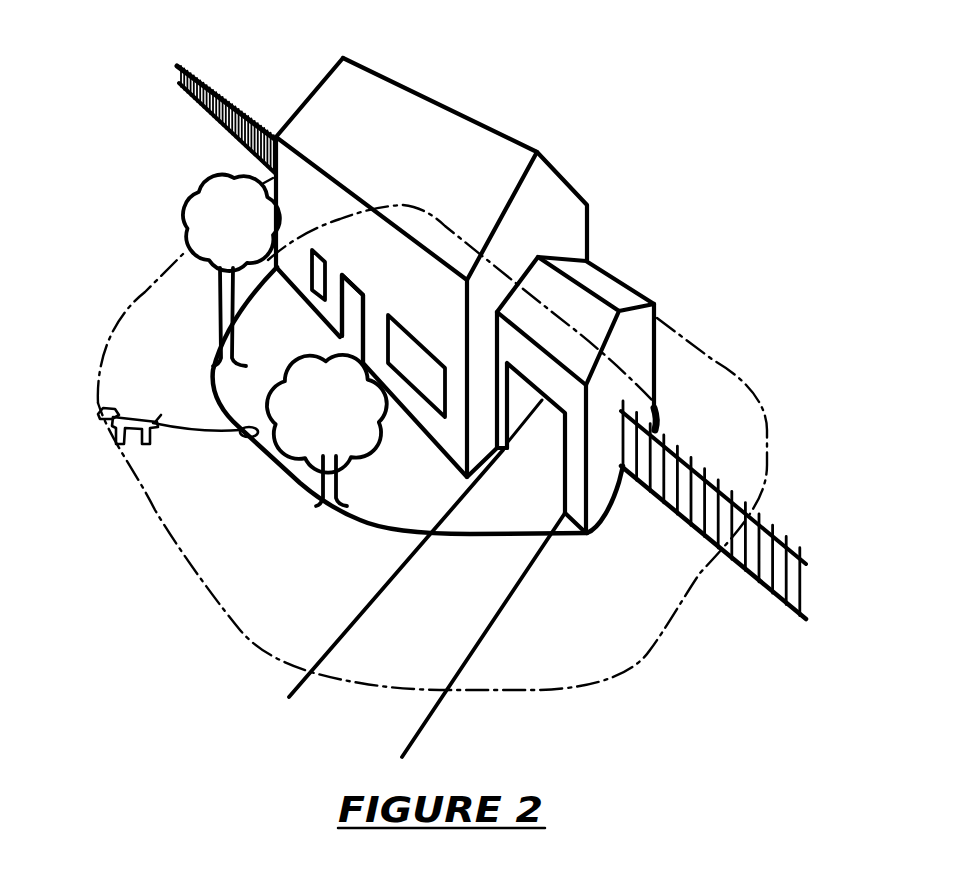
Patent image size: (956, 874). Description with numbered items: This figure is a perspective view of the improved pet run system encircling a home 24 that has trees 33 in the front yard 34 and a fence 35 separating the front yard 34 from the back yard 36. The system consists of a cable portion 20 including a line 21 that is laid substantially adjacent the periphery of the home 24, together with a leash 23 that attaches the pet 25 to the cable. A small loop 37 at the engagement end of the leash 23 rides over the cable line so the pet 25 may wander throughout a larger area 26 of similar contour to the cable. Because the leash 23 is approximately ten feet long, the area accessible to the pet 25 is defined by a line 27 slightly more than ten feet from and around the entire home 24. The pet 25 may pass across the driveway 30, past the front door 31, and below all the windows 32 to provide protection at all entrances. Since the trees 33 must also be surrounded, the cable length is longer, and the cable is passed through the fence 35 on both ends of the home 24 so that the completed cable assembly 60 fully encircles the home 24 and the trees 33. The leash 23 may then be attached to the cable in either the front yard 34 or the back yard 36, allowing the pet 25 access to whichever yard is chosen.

The cable portion 20 is at (280, 468).
The line 21 is at (292, 490).
The leash 23 is at (198, 436).
The home 24 is at (574, 187).
The pet 25 is at (133, 415).
The area 26 is at (184, 303).
The line 27 is at (242, 628).
The driveway 30 is at (375, 732).
The front door 31 is at (363, 295).
The windows 32 is at (320, 252).
The trees 33 is at (285, 340).
The front yard 34 is at (68, 473).
The fence 35 is at (216, 128).
The back yard 36 is at (878, 437).
The small loop 37 is at (247, 430).
The cable assembly 60 is at (601, 533).